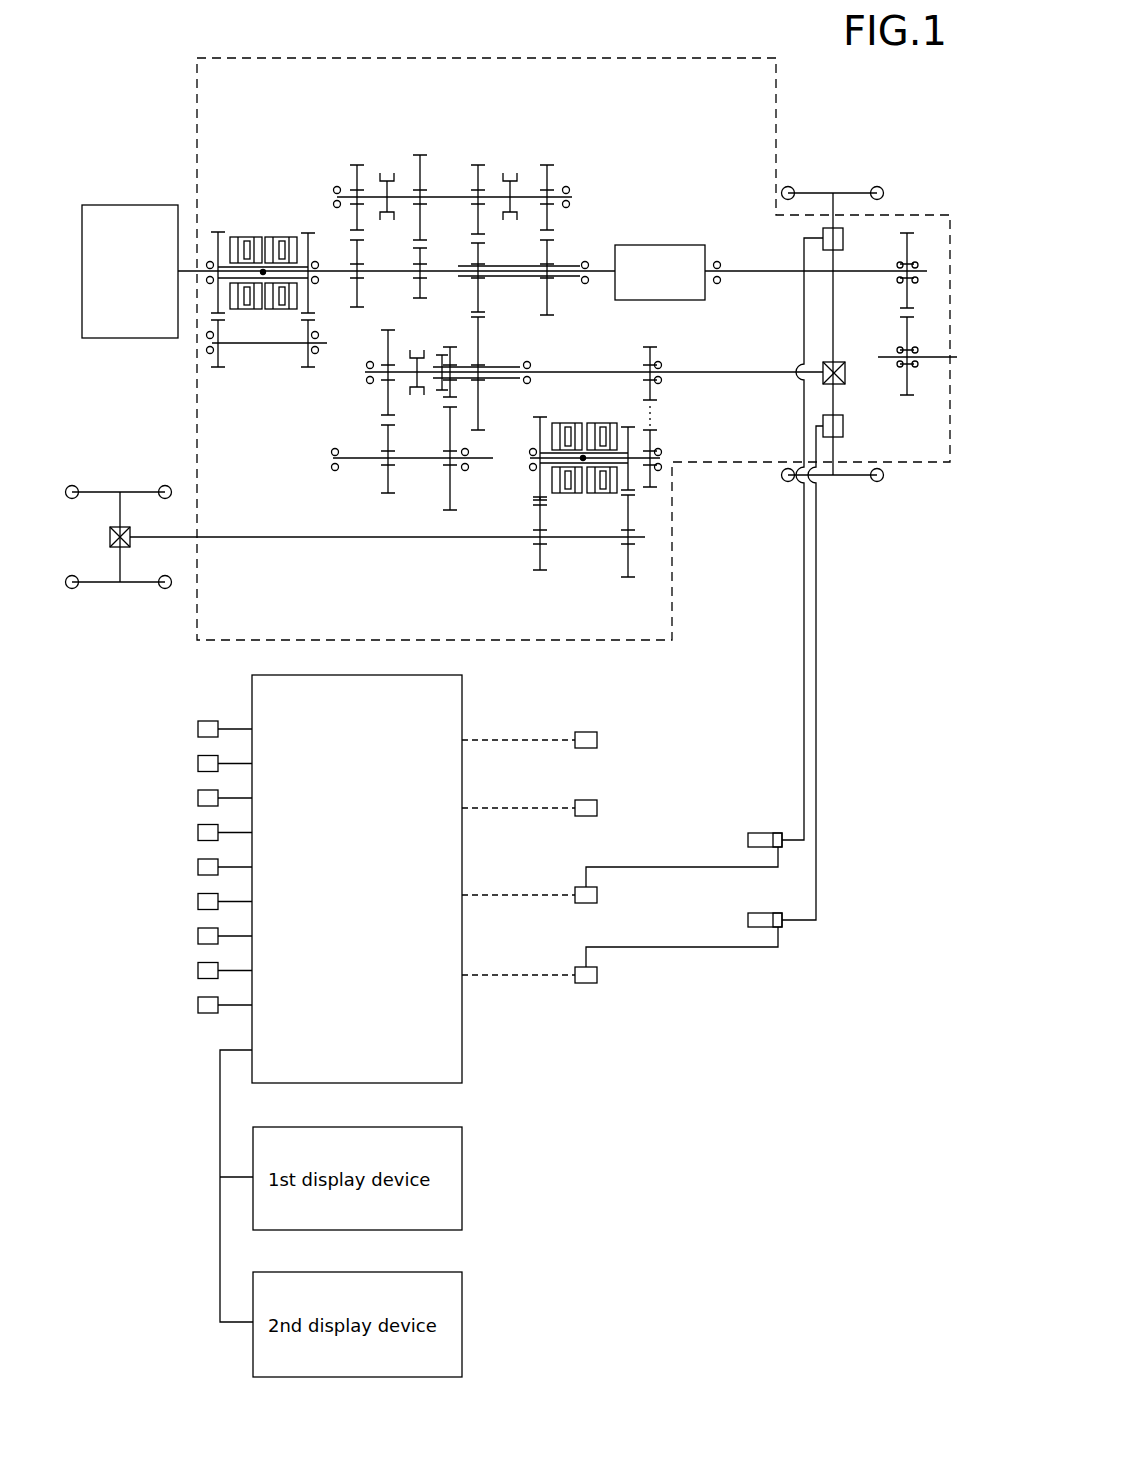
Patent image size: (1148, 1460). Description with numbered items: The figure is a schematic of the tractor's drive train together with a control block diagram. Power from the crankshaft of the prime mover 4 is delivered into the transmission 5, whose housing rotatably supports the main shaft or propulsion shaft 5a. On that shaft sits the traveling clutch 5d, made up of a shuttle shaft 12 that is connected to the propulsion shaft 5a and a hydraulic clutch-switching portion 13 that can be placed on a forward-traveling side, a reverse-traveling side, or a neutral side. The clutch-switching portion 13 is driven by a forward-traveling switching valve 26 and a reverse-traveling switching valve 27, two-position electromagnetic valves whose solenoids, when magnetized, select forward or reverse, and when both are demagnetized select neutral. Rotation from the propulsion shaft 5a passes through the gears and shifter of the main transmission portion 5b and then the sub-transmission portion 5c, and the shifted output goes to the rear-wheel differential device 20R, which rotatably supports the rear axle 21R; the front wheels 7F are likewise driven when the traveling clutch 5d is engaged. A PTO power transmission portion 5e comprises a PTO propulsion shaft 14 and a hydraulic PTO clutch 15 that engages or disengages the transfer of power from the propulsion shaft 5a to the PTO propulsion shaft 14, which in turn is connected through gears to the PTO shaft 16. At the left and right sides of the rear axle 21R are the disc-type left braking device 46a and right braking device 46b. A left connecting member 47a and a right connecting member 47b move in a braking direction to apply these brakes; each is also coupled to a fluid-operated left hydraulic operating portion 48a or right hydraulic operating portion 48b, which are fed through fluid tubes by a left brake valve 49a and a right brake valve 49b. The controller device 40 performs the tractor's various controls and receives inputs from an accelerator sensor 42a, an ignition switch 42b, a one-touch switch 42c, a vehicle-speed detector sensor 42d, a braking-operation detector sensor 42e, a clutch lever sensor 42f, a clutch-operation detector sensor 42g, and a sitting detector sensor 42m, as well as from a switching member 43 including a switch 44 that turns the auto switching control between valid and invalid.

The prime mover 4 is at (118, 205).
The transmission 5 is at (905, 212).
The main shaft (propulsion shaft) 5a is at (600, 268).
The main transmission portion 5b is at (569, 152).
The sub-transmission portion 5c is at (434, 485).
The traveling clutch 5d is at (267, 232).
The PTO power transmission portion 5e is at (771, 224).
The shuttle shaft 12 is at (226, 268).
The clutch-switching portion 13 is at (290, 217).
The PTO propulsion shaft 14 is at (816, 232).
The PTO clutch 15 is at (694, 258).
The PTO shaft 16 is at (928, 358).
The rear-wheel differential device 20R is at (825, 362).
The rear axle 21R is at (832, 295).
The left braking device 46a is at (845, 430).
The right braking device 46b is at (832, 228).
The left connecting member 47a is at (818, 693).
The right connecting member 47b is at (806, 648).
The left hydraulic operating portion 48a is at (756, 913).
The right hydraulic operating portion 48b is at (756, 833).
The left brake valve 49a is at (580, 967).
The right brake valve 49b is at (580, 887).
The forward-traveling switching valve 26 is at (598, 739).
The reverse-traveling switching valve 27 is at (598, 808).
The controller device 40 is at (464, 699).
The accelerator sensor 42a is at (198, 728).
The ignition switch 42b is at (198, 762).
The one-touch switch 42c is at (198, 797).
The vehicle-speed detector sensor 42d is at (198, 832).
The braking-operation detector sensor 42e is at (198, 866).
The clutch lever sensor 42f is at (198, 900).
The clutch-operation detector sensor 42g is at (198, 935).
The sitting detector sensor 42m is at (198, 970).
The switching member 43 is at (146, 1004).
The switch 44 is at (198, 1004).
The front wheels 7F is at (72, 486).